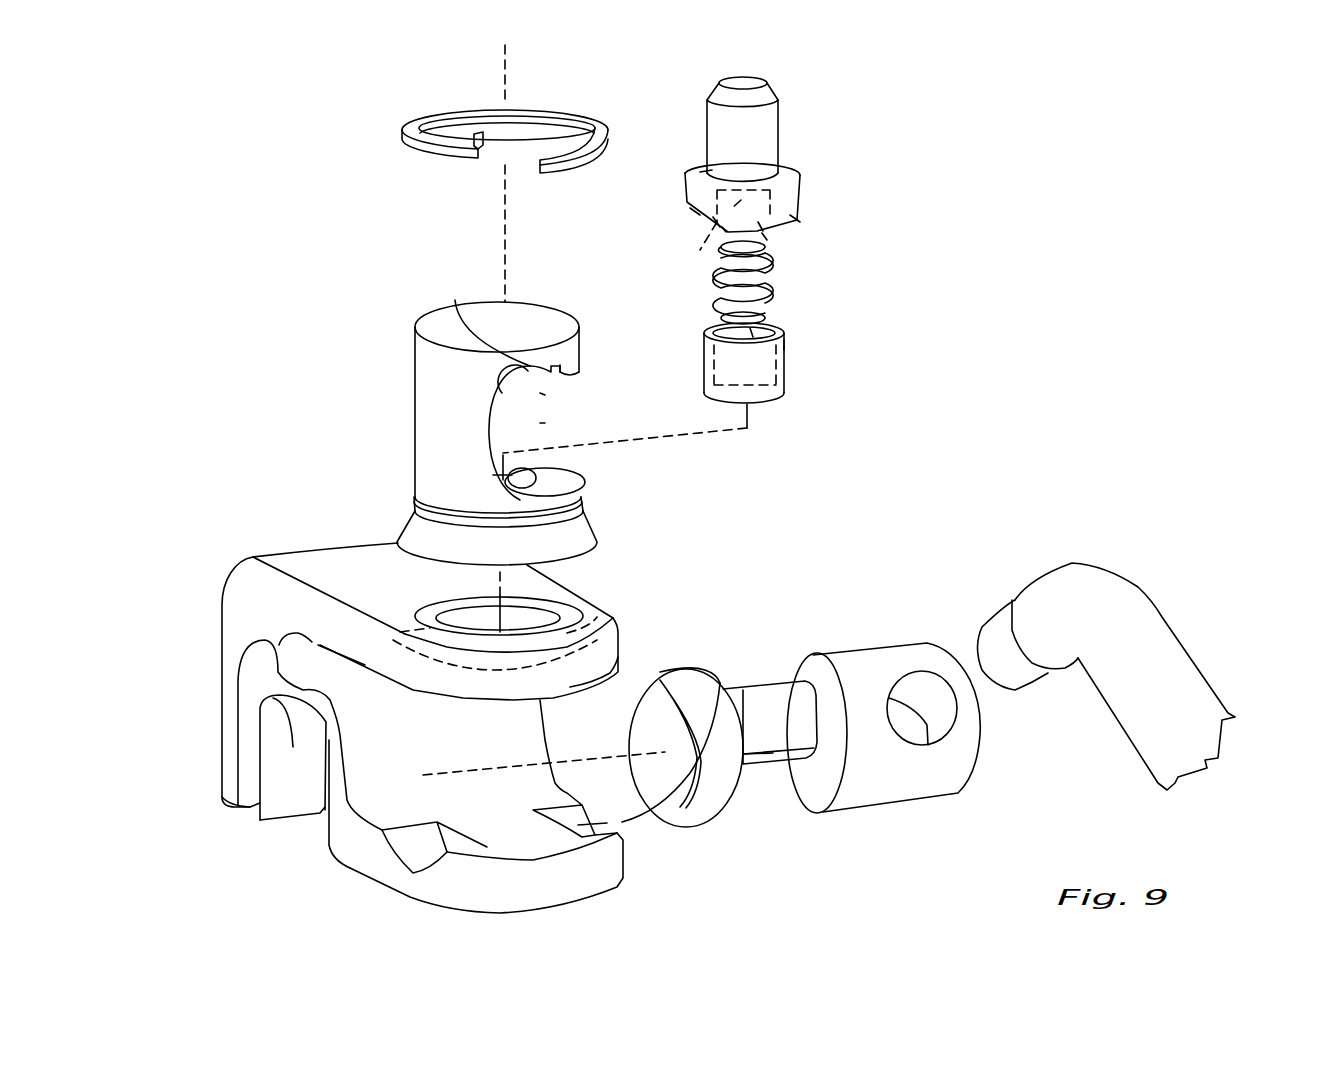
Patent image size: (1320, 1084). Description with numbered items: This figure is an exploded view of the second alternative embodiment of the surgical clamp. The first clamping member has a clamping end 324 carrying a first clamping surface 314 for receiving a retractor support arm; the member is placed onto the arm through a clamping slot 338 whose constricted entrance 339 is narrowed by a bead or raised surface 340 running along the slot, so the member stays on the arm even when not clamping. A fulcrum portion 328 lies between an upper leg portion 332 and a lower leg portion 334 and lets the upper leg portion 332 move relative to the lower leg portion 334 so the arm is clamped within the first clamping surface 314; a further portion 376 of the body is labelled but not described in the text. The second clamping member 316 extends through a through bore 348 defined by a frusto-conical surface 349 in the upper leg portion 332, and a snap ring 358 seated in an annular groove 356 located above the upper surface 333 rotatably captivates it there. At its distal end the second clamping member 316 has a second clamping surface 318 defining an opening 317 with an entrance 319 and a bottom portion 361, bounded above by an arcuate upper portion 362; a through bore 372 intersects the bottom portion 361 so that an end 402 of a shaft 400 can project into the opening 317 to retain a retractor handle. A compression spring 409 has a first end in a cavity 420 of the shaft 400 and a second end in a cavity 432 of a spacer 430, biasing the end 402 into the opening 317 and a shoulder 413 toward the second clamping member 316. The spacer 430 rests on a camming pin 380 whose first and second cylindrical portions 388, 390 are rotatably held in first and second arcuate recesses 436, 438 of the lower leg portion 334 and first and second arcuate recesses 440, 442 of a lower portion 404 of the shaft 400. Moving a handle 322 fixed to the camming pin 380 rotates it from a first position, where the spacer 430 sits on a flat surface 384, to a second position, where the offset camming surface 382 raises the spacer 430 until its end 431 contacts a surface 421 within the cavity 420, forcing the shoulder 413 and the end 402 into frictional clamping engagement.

The snap ring 358 is at (530, 115).
The shaft 400 is at (749, 165).
The end of the shaft 402 is at (727, 81).
The lower portion of the shaft 404 is at (692, 192).
The shoulder 413 is at (782, 166).
The first arcuate recess 440 is at (700, 211).
The second arcuate recess 442 is at (800, 222).
The surface within the cavity 421 is at (700, 250).
The cavity of the shaft 420 is at (762, 233).
The compression spring 409 is at (767, 276).
The cavity within the spacer 432 is at (750, 337).
The end of the spacer 431 is at (787, 326).
The spacer 430 is at (782, 361).
The second clamping member 316 is at (521, 369).
The second clamping surface 318 is at (481, 315).
The arcuate upper portion 362 is at (560, 365).
The opening 317 is at (540, 393).
The entrance to the opening 319 is at (540, 422).
The through bore 372 is at (537, 467).
The bottom portion of the clamping surface 361 is at (547, 493).
The annular groove 356 is at (577, 513).
The upper surface of the upper leg portion 333 is at (373, 557).
The clamping end 324 is at (422, 730).
The upper leg portion 332 is at (607, 605).
The frusto-conical surface 349 is at (613, 597).
The through bore 348 is at (607, 680).
The fulcrum portion 328 is at (278, 673).
The first clamping surface 314 is at (293, 757).
The clamping slot 338 is at (309, 780).
The bead or raised surface 340 is at (277, 810).
The constricted entrance 339 is at (323, 827).
The first arcuate recess 436 is at (407, 857).
The lower leg portion 334 is at (447, 906).
The base ring 376 is at (585, 912).
The second arcuate recess 438 is at (720, 683).
The first cylindrical portion 388 is at (682, 749).
The camming surface 382 is at (771, 779).
The flat surface 384 is at (773, 754).
The camming pin 380 is at (883, 758).
The second cylindrical portion 390 is at (945, 783).
The handle 322 is at (1167, 745).